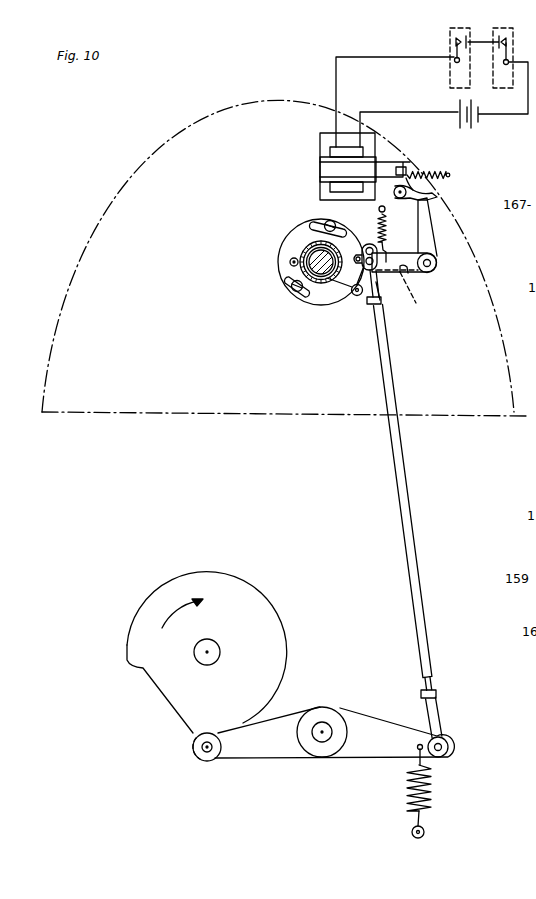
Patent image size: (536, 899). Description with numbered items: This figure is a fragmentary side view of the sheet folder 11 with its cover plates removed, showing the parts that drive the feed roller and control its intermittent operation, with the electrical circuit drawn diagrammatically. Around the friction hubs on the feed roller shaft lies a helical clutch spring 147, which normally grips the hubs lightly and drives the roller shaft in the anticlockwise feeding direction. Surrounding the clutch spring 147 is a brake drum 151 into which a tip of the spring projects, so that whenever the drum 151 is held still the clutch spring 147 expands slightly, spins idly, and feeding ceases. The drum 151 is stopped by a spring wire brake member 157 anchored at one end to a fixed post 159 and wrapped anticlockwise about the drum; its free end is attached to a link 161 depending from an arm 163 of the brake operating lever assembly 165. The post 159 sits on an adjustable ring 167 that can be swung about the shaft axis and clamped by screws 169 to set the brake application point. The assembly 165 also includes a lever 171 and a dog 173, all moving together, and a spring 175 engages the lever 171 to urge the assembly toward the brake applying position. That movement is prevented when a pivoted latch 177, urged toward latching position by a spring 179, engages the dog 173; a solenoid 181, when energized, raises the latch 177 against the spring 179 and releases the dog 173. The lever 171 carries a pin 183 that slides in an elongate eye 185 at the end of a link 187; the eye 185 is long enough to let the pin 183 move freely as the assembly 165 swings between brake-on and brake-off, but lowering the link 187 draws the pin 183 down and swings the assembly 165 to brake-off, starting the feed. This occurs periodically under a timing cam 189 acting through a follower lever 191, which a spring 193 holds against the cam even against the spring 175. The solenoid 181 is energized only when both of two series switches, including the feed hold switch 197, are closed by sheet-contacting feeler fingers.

The sheet folder 11 is at (468, 163).
The helical clutch spring 147 is at (325, 276).
The brake drum 151 is at (312, 246).
The spring wire brake member 157 is at (306, 253).
The fixed post 159 is at (290, 263).
The link 161 is at (344, 285).
The arm 163 is at (418, 292).
The brake operating lever assembly 165 is at (447, 274).
The adjustable ring 167 is at (310, 306).
The screws 169 is at (326, 222).
The lever 171 is at (378, 274).
The dog 173 is at (428, 234).
The spring 175 is at (384, 246).
The pivoted latch 177 is at (434, 197).
The spring 179 is at (424, 173).
The solenoid 181 is at (320, 169).
The pin 183 is at (382, 286).
The elongate eye 185 is at (368, 244).
The link 187 is at (397, 446).
The timing cam 189 is at (248, 593).
The follower lever 191 is at (275, 751).
The spring 193 is at (436, 794).
The feed hold switch 197 is at (449, 40).